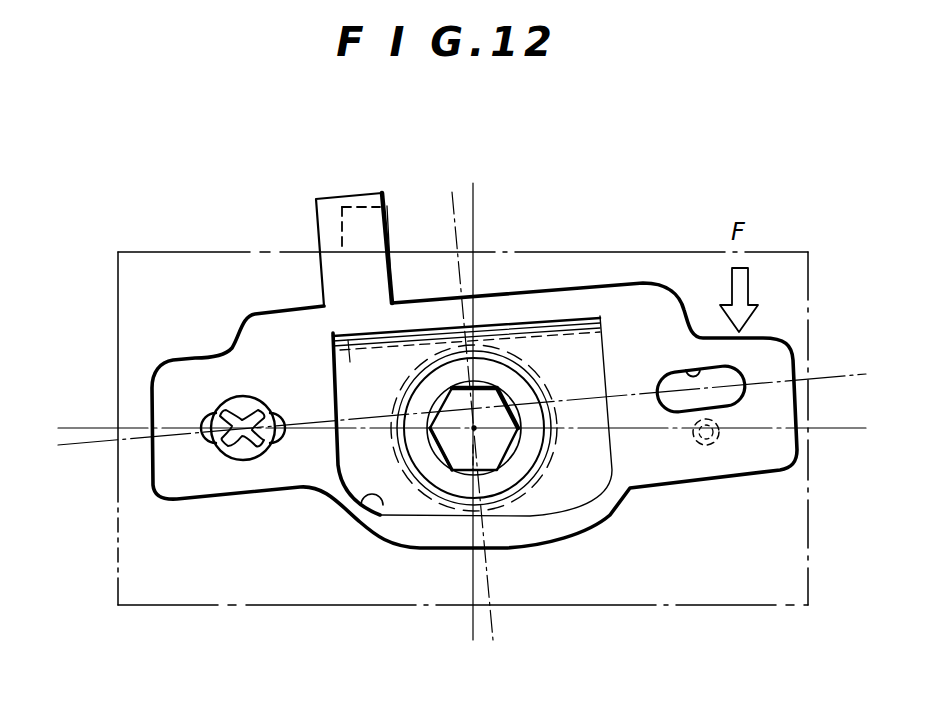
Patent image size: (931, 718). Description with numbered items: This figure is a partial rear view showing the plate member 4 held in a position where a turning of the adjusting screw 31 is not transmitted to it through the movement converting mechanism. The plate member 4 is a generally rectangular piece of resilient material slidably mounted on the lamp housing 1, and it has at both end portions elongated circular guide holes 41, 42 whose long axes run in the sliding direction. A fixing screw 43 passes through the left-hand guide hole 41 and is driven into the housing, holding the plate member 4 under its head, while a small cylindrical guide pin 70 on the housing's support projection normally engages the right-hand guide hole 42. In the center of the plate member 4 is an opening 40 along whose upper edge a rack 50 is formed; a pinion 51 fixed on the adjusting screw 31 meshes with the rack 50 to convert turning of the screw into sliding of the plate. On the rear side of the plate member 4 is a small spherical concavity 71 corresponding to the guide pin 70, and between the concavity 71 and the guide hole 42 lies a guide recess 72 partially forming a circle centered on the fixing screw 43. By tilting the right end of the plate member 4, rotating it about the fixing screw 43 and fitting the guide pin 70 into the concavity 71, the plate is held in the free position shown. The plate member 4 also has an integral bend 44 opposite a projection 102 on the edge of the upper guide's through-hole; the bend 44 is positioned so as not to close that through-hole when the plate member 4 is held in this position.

The lamp housing 1 is at (132, 248).
The plate member 4 is at (643, 279).
The adjusting screw 31 is at (497, 442).
The opening 40 is at (385, 505).
The left-hand guide hole 41 is at (210, 445).
The right-hand guide hole 42 is at (698, 372).
The fixing screw 43 is at (247, 395).
The bend 44 is at (327, 195).
The rack 50 is at (334, 440).
The pinion 51 is at (520, 353).
The guide pin 70 is at (685, 443).
The spherical concavity 71 is at (713, 457).
The guide recess 72 is at (733, 453).
The projection 102 is at (388, 205).